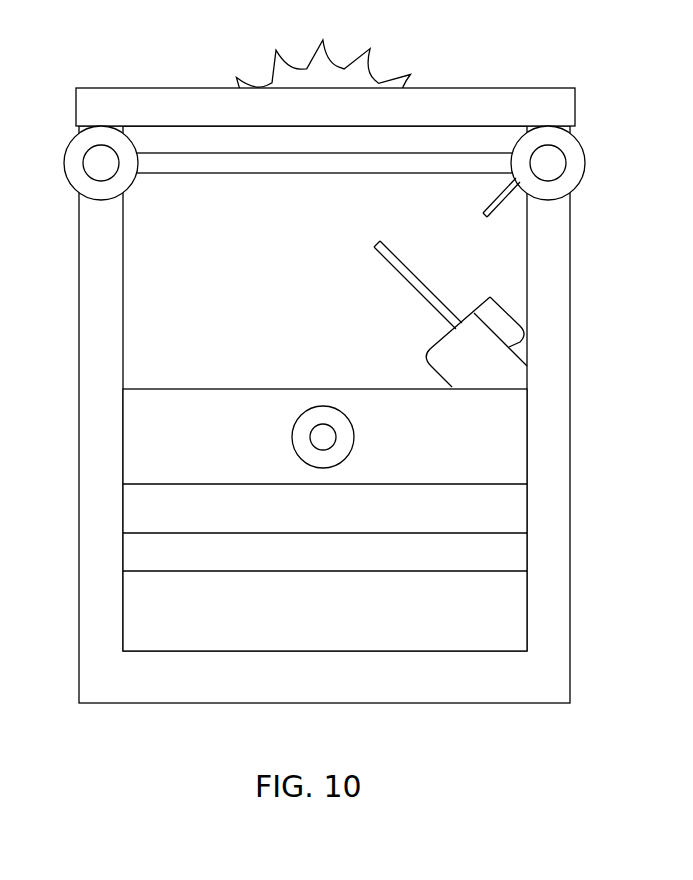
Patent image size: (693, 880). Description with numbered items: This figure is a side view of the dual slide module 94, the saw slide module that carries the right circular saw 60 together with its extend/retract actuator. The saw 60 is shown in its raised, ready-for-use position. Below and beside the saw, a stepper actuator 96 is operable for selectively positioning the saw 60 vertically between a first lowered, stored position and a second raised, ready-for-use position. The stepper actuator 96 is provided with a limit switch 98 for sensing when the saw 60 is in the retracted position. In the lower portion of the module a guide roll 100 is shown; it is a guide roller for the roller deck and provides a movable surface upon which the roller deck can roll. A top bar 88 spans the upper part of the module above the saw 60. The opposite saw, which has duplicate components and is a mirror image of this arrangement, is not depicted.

The right saw 60 is at (378, 57).
The top bar 88 is at (537, 93).
The dual slide module 94 is at (622, 93).
The stepper actuator 96 is at (510, 370).
The limit switch 98 is at (503, 313).
The guide roll 100 is at (517, 554).